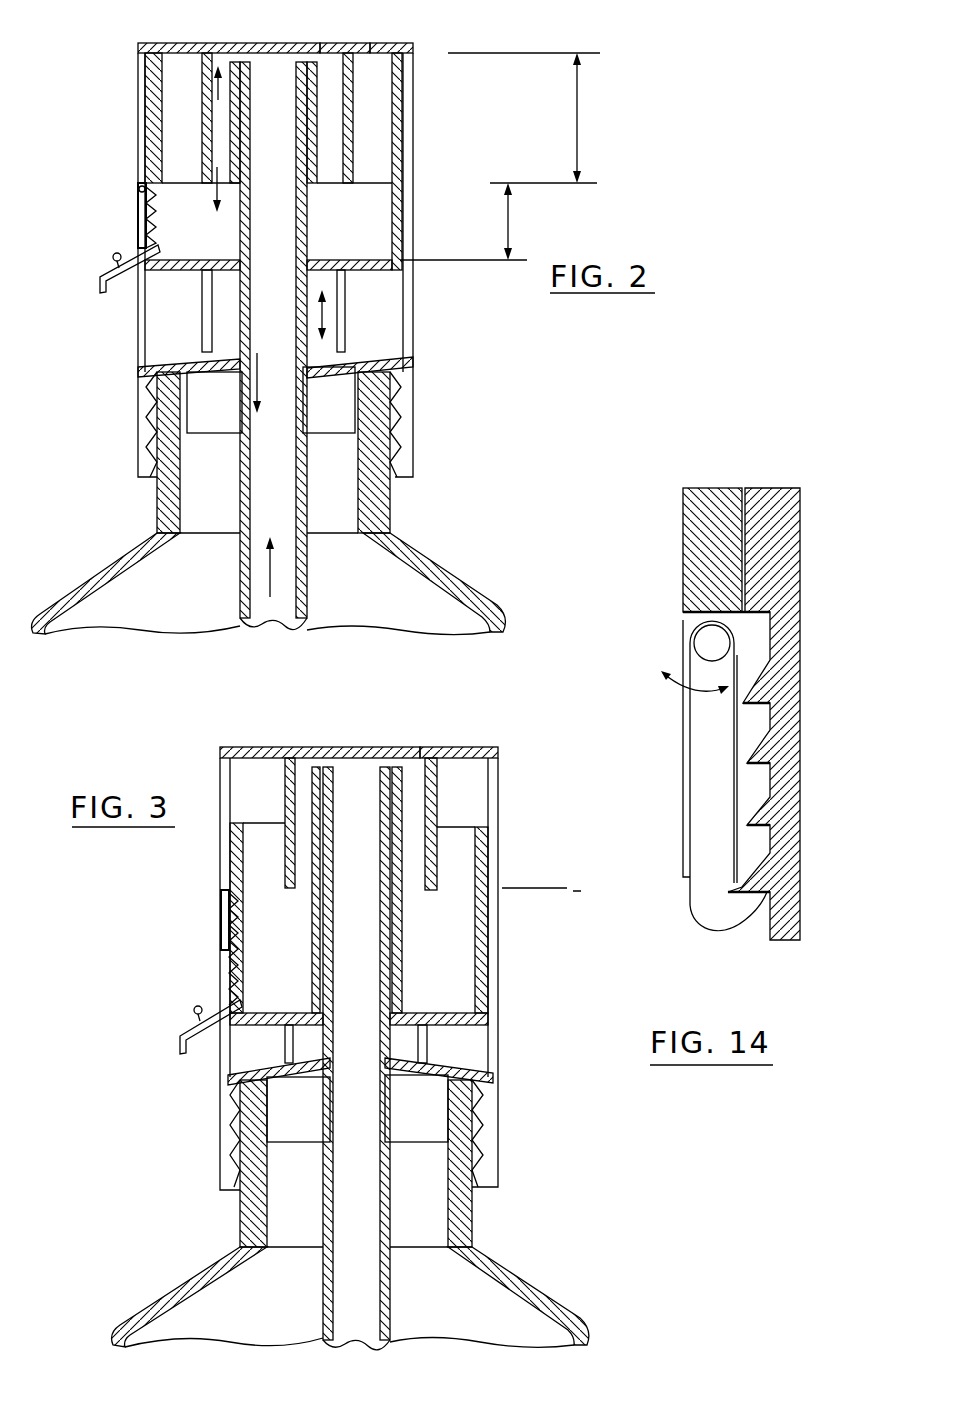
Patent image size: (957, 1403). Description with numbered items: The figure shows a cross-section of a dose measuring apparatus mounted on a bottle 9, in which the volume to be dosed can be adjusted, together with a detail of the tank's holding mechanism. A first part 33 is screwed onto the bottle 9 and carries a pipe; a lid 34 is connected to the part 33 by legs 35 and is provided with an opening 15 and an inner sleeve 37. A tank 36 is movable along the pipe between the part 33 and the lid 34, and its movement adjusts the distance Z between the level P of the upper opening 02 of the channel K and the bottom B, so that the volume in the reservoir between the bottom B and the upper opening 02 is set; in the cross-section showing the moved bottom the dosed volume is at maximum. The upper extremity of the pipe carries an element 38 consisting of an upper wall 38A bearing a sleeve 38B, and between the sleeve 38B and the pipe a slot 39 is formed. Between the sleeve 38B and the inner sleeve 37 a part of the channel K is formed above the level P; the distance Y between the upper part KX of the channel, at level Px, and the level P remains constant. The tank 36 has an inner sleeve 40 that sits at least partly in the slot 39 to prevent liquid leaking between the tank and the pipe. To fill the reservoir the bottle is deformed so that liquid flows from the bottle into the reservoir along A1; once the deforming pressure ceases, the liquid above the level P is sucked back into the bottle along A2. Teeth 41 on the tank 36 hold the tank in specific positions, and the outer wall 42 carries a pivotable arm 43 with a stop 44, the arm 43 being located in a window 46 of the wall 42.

In FIG. 2, the bottle 9 is at (480, 583).
In FIG. 3, the bottle 9 is at (533, 1280).
In FIG. 2, the opening 15 is at (372, 43).
In FIG. 3, the opening 15 is at (455, 750).
In FIG. 2, the first part 33 is at (413, 410).
In FIG. 3, the first part 33 is at (495, 1107).
In FIG. 2, the lid 34 is at (348, 42).
In FIG. 3, the lid 34 is at (398, 750).
In FIG. 2, the legs 35 is at (407, 283).
In FIG. 3, the legs 35 is at (492, 972).
In FIG. 2, the tank 36 is at (398, 163).
In FIG. 3, the tank 36 is at (478, 897).
In FIG. 14, the tank 36 is at (775, 497).
In FIG. 2, the inner sleeve 37 is at (357, 85).
In FIG. 3, the inner sleeve 37 is at (442, 787).
In FIG. 2, the element 38 is at (316, 46).
In FIG. 2, the upper wall 38A is at (222, 43).
In FIG. 2, the sleeve 38B is at (215, 118).
In FIG. 2, the slot 39 is at (237, 68).
In FIG. 3, the slot 39 is at (393, 770).
In FIG. 2, the inner sleeve 40 is at (233, 230).
In FIG. 2, the teeth 41 is at (140, 195).
In FIG. 14, the teeth 41 is at (763, 695).
In FIG. 2, the outer wall 42 is at (414, 118).
In FIG. 14, the outer wall 42 is at (715, 503).
In FIG. 2, the pivotable arm 43 is at (137, 208).
In FIG. 3, the pivotable arm 43 is at (223, 915).
In FIG. 14, the pivotable arm 43 is at (693, 760).
In FIG. 2, the stop 44 is at (138, 240).
In FIG. 3, the stop 44 is at (220, 972).
In FIG. 14, the stop 44 is at (715, 910).
In FIG. 14, the window 46 is at (693, 622).
In FIG. 2, the liquid flow from bottle to reservoir A1 is at (215, 187).
In FIG. 2, the liquid flow back to bottle A2 is at (218, 87).
In FIG. 2, the bottom B is at (358, 262).
In FIG. 3, the bottom B is at (430, 1015).
In FIG. 2, the channel K is at (334, 122).
In FIG. 2, the upper part of the channel KX is at (280, 57).
In FIG. 3, the upper part of the channel KX is at (356, 1058).
In FIG. 2, the upper opening 02 is at (332, 178).
In FIG. 2, the level P is at (558, 169).
In FIG. 3, the level P is at (541, 876).
In FIG. 2, the level of the upper part of the channel Px is at (532, 37).
In FIG. 2, the distance Y is at (580, 115).
In FIG. 2, the distance Z is at (515, 222).